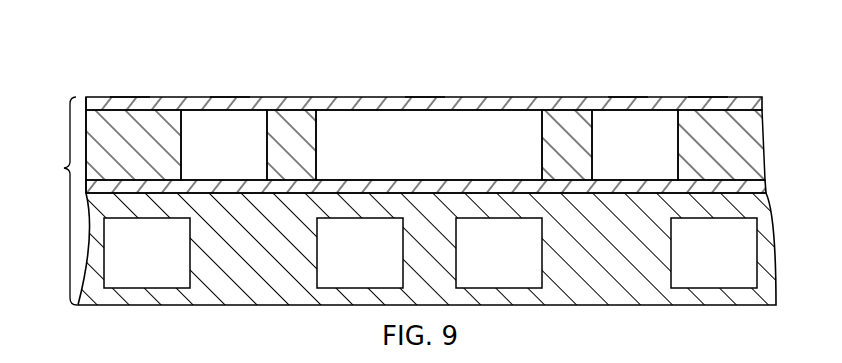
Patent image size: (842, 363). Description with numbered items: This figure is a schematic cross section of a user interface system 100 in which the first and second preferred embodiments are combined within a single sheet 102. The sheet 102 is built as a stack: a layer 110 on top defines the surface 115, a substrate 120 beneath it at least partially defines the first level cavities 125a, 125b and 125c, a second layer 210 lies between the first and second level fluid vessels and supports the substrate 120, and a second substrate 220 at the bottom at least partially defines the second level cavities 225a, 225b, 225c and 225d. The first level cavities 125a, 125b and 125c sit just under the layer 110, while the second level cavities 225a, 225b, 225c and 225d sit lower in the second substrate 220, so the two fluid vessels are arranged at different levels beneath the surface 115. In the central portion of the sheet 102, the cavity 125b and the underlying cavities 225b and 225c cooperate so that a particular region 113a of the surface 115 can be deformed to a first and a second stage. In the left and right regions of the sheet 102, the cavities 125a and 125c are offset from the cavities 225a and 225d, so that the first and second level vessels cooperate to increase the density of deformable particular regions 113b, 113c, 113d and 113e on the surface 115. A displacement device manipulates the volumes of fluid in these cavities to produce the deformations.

The user interface system 100 is at (92, 64).
The sheet 102 is at (51, 201).
The layer 110 is at (305, 101).
The first particular region of the surface 113a is at (424, 96).
The second particular region of the surface 113b is at (129, 96).
The particular region of the surface 113c is at (229, 96).
The particular region of the surface 113d is at (627, 96).
The particular region of the surface 113e is at (706, 96).
The surface 115 is at (556, 97).
The substrate 120 is at (569, 136).
The first cavity 125a is at (224, 145).
The second cavity 125b is at (429, 145).
The cavity 125c is at (635, 145).
The second layer 210 is at (607, 188).
The second substrate 220 is at (220, 283).
The first cavity 225a is at (147, 253).
The second cavity 225b is at (360, 253).
The cavity 225c is at (499, 253).
The cavity 225d is at (714, 253).